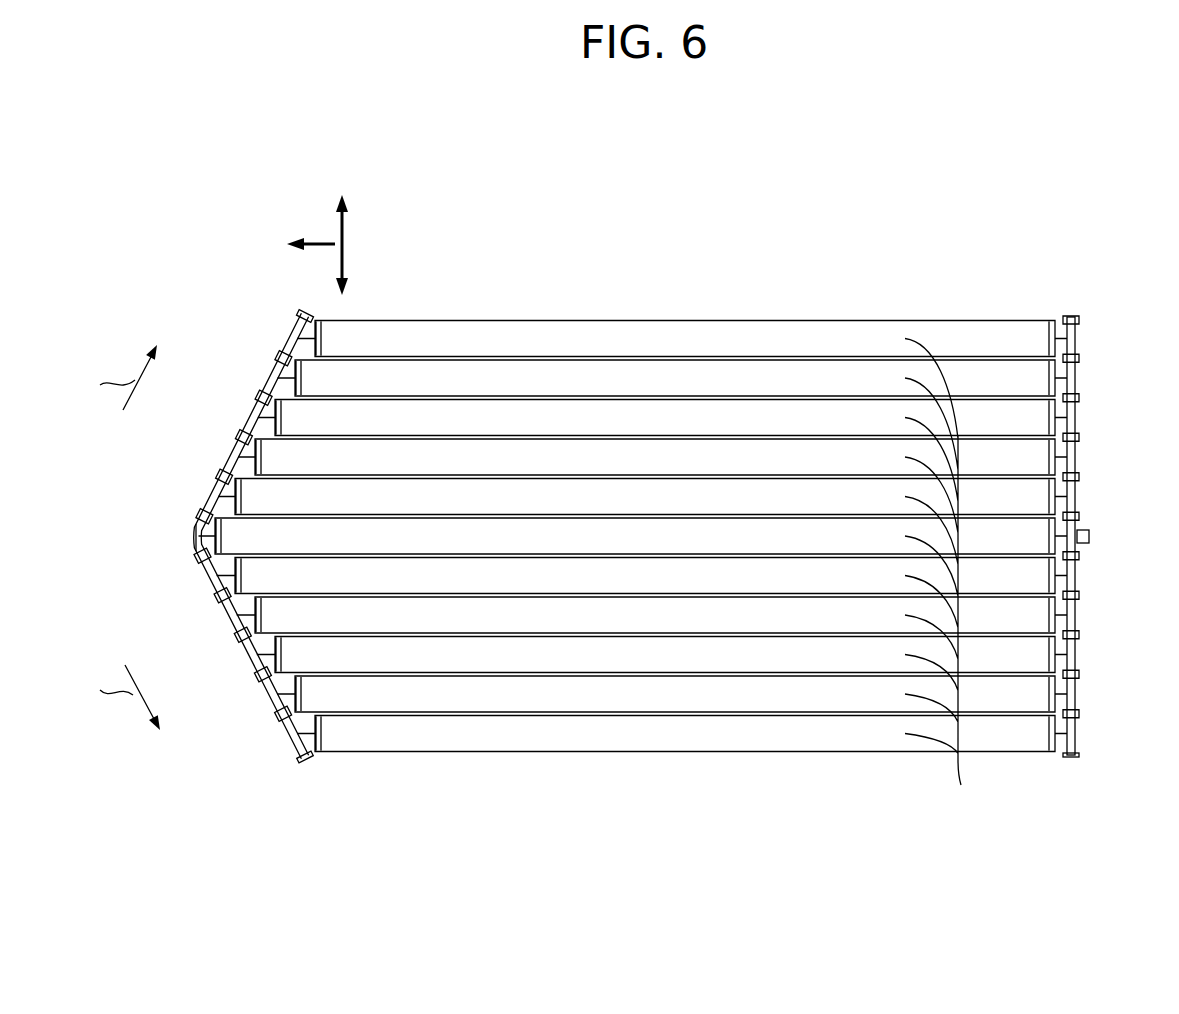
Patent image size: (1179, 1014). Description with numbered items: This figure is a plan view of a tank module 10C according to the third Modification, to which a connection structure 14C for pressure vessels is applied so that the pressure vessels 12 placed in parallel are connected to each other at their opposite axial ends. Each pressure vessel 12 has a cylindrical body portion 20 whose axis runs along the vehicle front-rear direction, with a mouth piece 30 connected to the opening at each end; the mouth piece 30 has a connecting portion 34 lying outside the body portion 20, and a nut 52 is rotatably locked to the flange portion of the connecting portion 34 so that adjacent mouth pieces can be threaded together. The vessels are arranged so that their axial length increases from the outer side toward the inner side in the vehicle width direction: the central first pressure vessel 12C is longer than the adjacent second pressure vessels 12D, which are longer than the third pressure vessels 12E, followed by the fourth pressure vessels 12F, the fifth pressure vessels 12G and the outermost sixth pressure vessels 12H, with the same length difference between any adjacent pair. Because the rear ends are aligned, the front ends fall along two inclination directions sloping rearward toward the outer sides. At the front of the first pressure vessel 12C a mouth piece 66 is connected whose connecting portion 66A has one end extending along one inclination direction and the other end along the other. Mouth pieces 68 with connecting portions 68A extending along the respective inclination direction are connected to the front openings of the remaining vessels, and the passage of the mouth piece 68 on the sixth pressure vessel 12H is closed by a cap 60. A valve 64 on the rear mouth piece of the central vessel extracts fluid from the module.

The tank module 10C is at (1010, 227).
The connection structure for pressure vessels 14C is at (930, 247).
The pressure vessel 12 is at (635, 537).
The first pressure vessel 12C is at (452, 535).
The second pressure vessel 12D is at (545, 577).
The third pressure vessel 12E is at (630, 617).
The fourth pressure vessel 12F is at (680, 419).
The fifth pressure vessel 12G is at (770, 380).
The sixth pressure vessel 12H is at (862, 340).
The body portion 20 is at (941, 576).
The mouth piece 30 is at (1077, 496).
The connecting portion 34 is at (1078, 322).
The nut 52 is at (1072, 314).
The cap 60 is at (1080, 758).
The valve 64 is at (1090, 537).
The mouth piece 66 is at (197, 533).
The connecting portion 66A is at (198, 545).
The mouth piece 68 is at (204, 536).
The connecting portion 68A is at (297, 322).